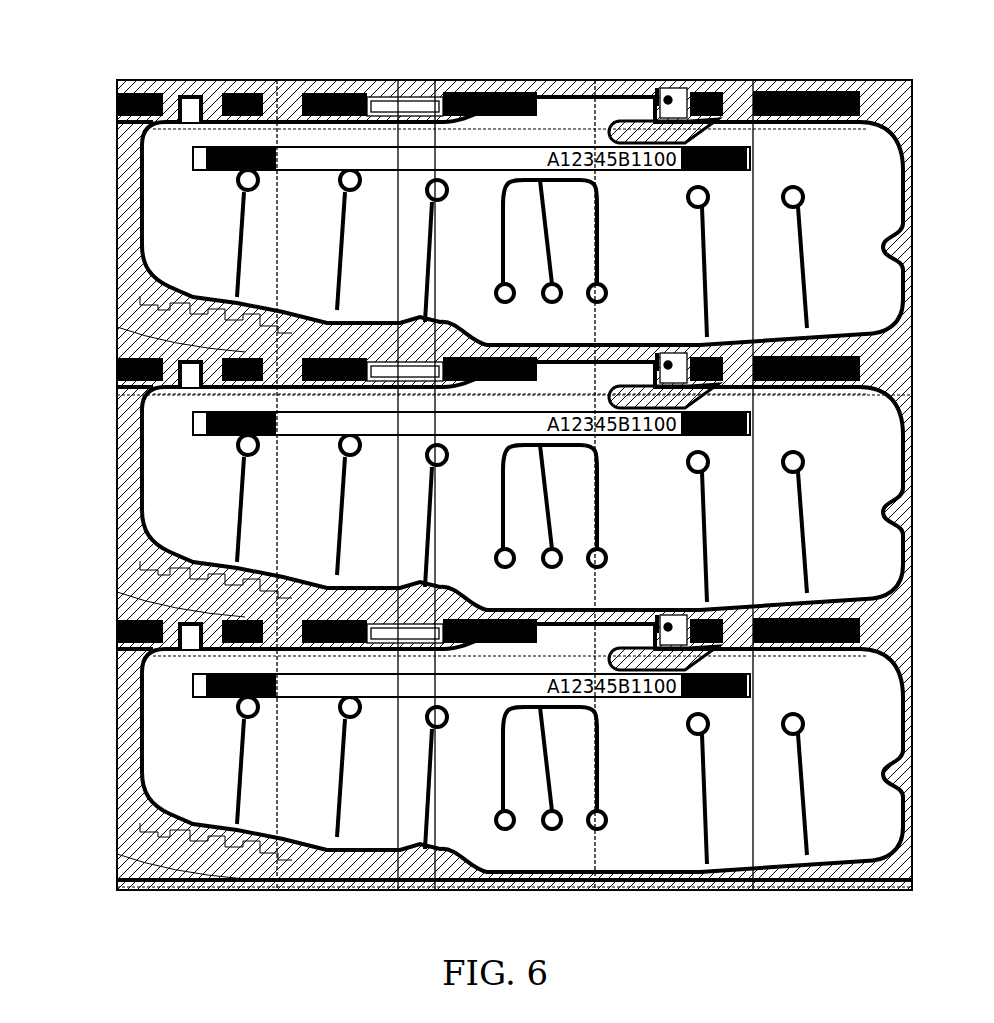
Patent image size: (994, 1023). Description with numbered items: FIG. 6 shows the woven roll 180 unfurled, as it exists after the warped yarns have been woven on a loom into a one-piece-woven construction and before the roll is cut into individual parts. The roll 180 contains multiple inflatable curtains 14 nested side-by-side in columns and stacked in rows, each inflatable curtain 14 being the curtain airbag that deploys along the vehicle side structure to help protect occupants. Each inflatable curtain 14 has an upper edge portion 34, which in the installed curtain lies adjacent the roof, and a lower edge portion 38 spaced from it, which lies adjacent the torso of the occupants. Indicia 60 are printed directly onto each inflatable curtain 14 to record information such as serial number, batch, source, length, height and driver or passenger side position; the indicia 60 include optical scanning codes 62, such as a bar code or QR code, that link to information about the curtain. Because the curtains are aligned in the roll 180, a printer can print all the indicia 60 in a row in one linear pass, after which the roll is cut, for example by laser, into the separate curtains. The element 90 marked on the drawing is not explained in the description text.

The stacked assembly of component layers 180 is at (112, 52).
The component layer 90 is at (105, 373).
The article component 14 is at (177, 202).
The support structure 34 is at (323, 84).
The identifier marking 60 is at (216, 187).
The barcode identifier 62 is at (722, 172).
The connector element 38 is at (690, 402).